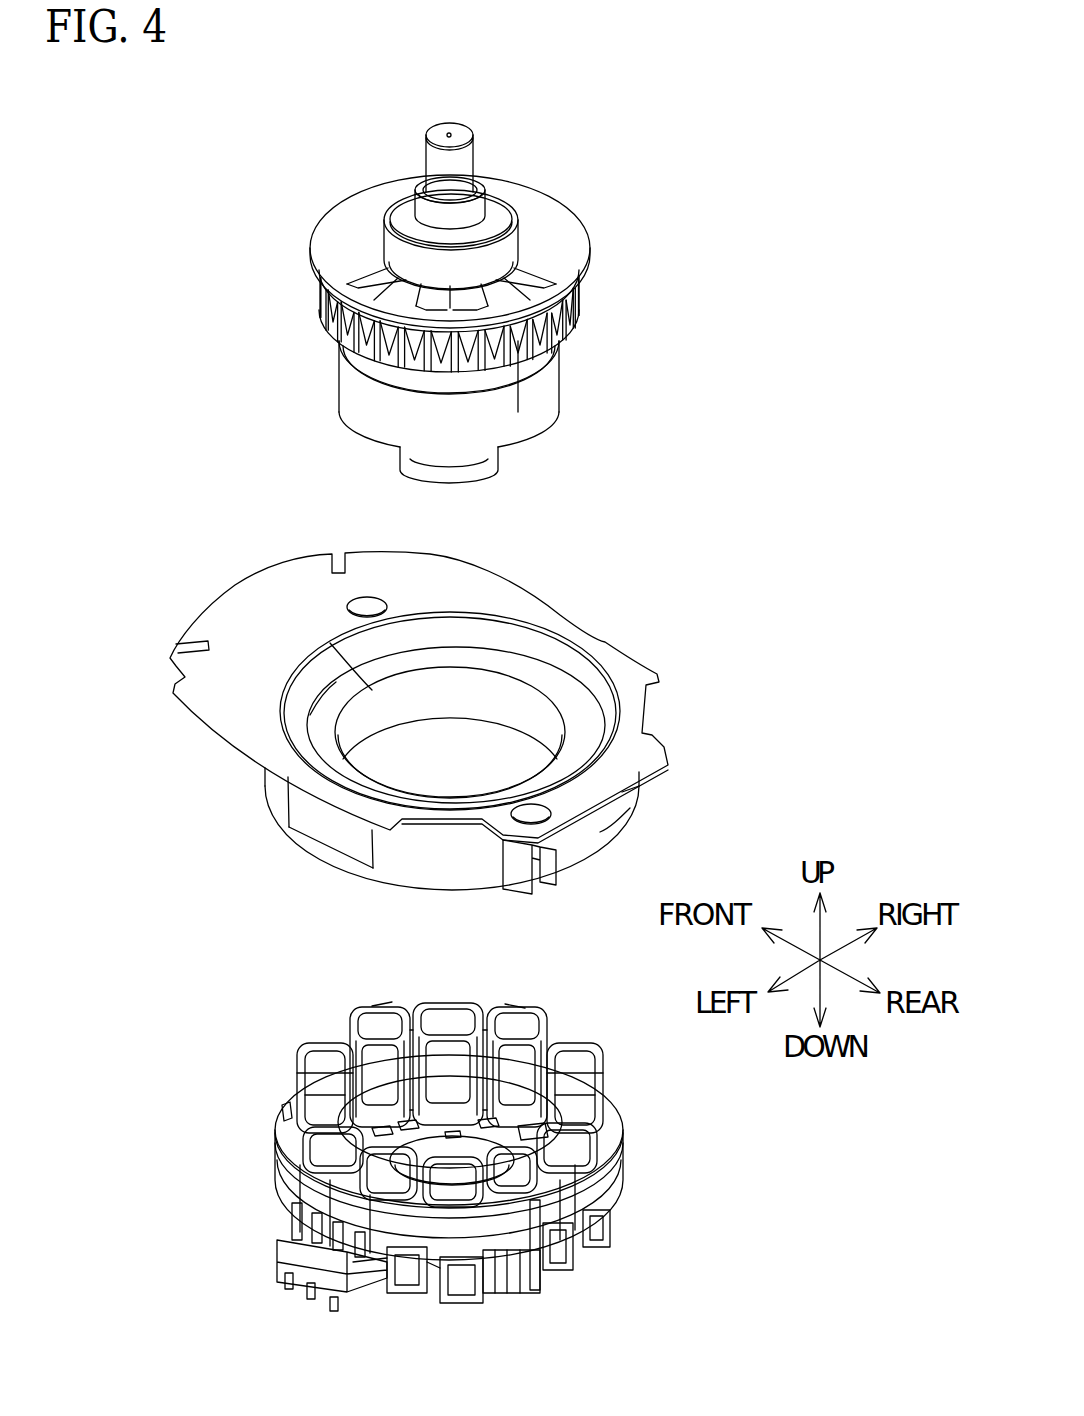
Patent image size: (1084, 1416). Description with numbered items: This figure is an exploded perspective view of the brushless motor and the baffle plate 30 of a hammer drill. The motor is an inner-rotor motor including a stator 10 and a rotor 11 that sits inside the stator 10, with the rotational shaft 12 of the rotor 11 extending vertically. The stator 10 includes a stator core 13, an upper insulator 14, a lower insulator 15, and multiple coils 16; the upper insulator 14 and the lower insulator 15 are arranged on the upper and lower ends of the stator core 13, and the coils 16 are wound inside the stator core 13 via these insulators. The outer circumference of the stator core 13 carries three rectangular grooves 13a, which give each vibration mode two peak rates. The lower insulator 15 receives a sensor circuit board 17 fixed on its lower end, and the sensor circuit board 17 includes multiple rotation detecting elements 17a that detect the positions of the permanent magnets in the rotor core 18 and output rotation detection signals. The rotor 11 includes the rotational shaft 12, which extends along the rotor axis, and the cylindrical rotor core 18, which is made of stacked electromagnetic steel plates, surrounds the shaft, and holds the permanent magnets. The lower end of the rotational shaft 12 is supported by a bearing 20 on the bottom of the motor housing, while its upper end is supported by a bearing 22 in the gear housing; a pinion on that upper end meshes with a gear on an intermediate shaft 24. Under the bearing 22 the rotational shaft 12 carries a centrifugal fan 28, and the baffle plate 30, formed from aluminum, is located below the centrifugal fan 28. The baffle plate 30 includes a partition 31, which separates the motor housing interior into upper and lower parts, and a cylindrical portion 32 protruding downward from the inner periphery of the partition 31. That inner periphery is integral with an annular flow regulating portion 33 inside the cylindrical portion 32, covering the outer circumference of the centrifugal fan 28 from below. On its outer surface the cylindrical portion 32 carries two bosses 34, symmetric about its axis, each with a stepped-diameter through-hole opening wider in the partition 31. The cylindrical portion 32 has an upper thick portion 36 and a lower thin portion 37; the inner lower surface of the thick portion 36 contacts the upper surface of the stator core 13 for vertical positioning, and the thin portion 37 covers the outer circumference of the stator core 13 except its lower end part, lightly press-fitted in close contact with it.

The stator 10 is at (668, 1133).
The rotor 11 is at (616, 334).
The rotational shaft 12 is at (484, 202).
The stator core 13 is at (610, 1180).
The rectangular grooves 13a is at (287, 1110).
The upper insulator 14 is at (608, 1115).
The lower insulator 15 is at (548, 1282).
The coils 16 is at (328, 1053).
The sensor circuit board 17 is at (455, 1125).
The rotation detecting elements 17a is at (380, 1067).
The rotor core 18 is at (557, 382).
The bearing 20 is at (497, 467).
The bearing 22 is at (516, 245).
The intermediate shaft 24 is at (475, 153).
The centrifugal fan 28 is at (355, 221).
The baffle plate 30 is at (650, 629).
The partition 31 is at (264, 592).
The cylindrical portion 32 is at (246, 792).
The flow regulating portion 33 is at (537, 674).
The bosses 34 is at (367, 604).
The thick portion 36 is at (630, 800).
The thin portion 37 is at (615, 826).